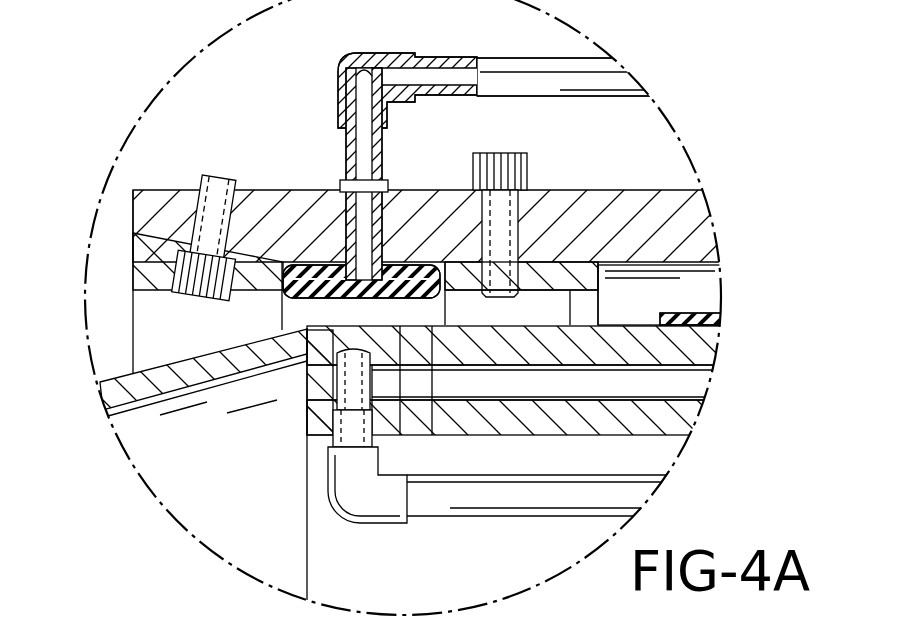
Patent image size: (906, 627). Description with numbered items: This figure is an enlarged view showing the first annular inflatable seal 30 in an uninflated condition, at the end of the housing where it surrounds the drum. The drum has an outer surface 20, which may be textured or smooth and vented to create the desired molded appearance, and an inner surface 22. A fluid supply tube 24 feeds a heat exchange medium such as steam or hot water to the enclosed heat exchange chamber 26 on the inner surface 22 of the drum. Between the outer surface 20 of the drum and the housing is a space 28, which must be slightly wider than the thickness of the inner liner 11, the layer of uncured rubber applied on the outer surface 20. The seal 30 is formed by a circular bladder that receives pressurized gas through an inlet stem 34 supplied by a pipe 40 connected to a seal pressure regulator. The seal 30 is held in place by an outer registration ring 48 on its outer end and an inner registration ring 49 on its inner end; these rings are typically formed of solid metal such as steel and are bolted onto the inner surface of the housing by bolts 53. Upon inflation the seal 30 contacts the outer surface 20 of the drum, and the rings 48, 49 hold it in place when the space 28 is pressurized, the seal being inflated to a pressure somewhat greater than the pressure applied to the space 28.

The inner liner 11 is at (685, 313).
The outer surface 20 is at (346, 312).
The inner surface 22 is at (680, 398).
The fluid supply tube 24 is at (377, 492).
The heat exchange chamber 26 is at (620, 384).
The space 28 is at (705, 281).
The first annular inflatable seal 30 is at (286, 298).
The inlet stem 34 is at (348, 152).
The pipe 40 is at (535, 70).
The outer registration ring 48 is at (153, 255).
The inner registration ring 49 is at (560, 282).
The bolt 53 is at (215, 195).